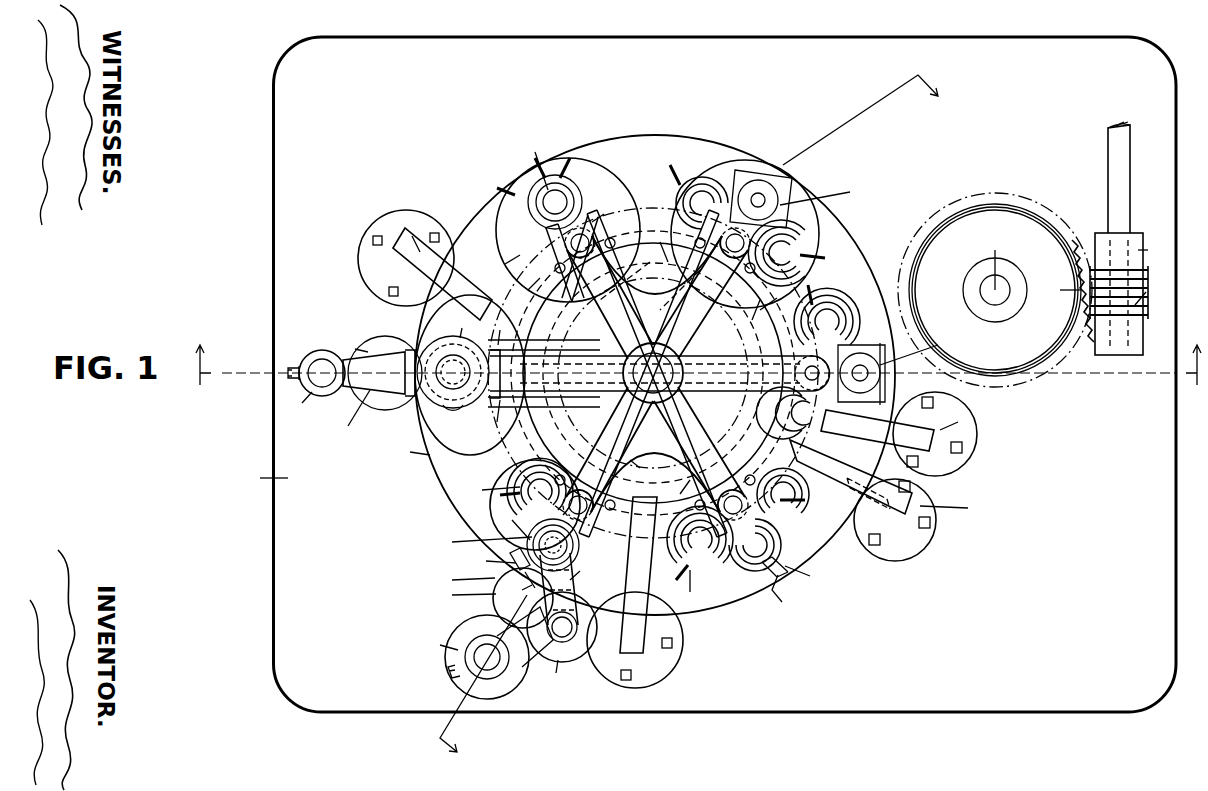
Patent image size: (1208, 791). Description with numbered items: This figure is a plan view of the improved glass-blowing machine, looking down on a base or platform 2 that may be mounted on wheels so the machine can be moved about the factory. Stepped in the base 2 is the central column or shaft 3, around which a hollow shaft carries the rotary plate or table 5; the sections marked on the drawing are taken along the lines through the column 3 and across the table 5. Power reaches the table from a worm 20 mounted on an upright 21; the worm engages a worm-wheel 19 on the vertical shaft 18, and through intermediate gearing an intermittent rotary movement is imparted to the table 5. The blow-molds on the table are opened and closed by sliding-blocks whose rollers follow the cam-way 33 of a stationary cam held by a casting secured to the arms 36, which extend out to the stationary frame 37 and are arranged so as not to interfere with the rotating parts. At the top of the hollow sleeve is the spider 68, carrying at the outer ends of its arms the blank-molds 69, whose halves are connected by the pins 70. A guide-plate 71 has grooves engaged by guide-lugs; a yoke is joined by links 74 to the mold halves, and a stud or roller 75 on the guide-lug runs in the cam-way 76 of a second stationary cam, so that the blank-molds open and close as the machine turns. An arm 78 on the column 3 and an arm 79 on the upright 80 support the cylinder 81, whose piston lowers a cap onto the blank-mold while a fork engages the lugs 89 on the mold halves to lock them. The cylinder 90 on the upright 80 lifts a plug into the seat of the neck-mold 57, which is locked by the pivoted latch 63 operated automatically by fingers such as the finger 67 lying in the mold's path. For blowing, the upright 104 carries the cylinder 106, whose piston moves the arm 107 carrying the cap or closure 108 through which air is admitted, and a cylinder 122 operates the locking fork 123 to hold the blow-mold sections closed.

The base or platform 2 is at (698, 417).
The column or shaft 3 is at (677, 403).
The plate or table 5 is at (645, 375).
The vertical shaft 18 is at (995, 276).
The worm-wheel 19 is at (996, 290).
The worm 20 is at (1129, 294).
The upright 21 is at (1139, 190).
The cam-way 33 is at (646, 470).
The arms 36 is at (676, 392).
The stationary frame 37 is at (674, 449).
The neck-mold 57 is at (730, 388).
The latch 63 is at (644, 569).
The finger 67 is at (868, 504).
The spider 68 is at (655, 374).
The blank-molds 69 is at (651, 374).
The pins 70 is at (609, 214).
The guide-plate 71 is at (779, 299).
The links 74 is at (621, 362).
The stud or roller 75 is at (650, 276).
The cam-way 76 is at (658, 242).
The arm 78 is at (660, 368).
The arm 79 is at (373, 394).
The upright 80 is at (315, 385).
The cylinder 81 is at (470, 375).
The lugs 89 is at (572, 373).
The cylinder 90 is at (380, 370).
The upright 104 is at (466, 657).
The cylinder 106 is at (547, 641).
The arm 107 is at (575, 589).
The cap or closure 108 is at (473, 541).
The cylinder 122 is at (481, 598).
The locking fork 123 is at (452, 578).